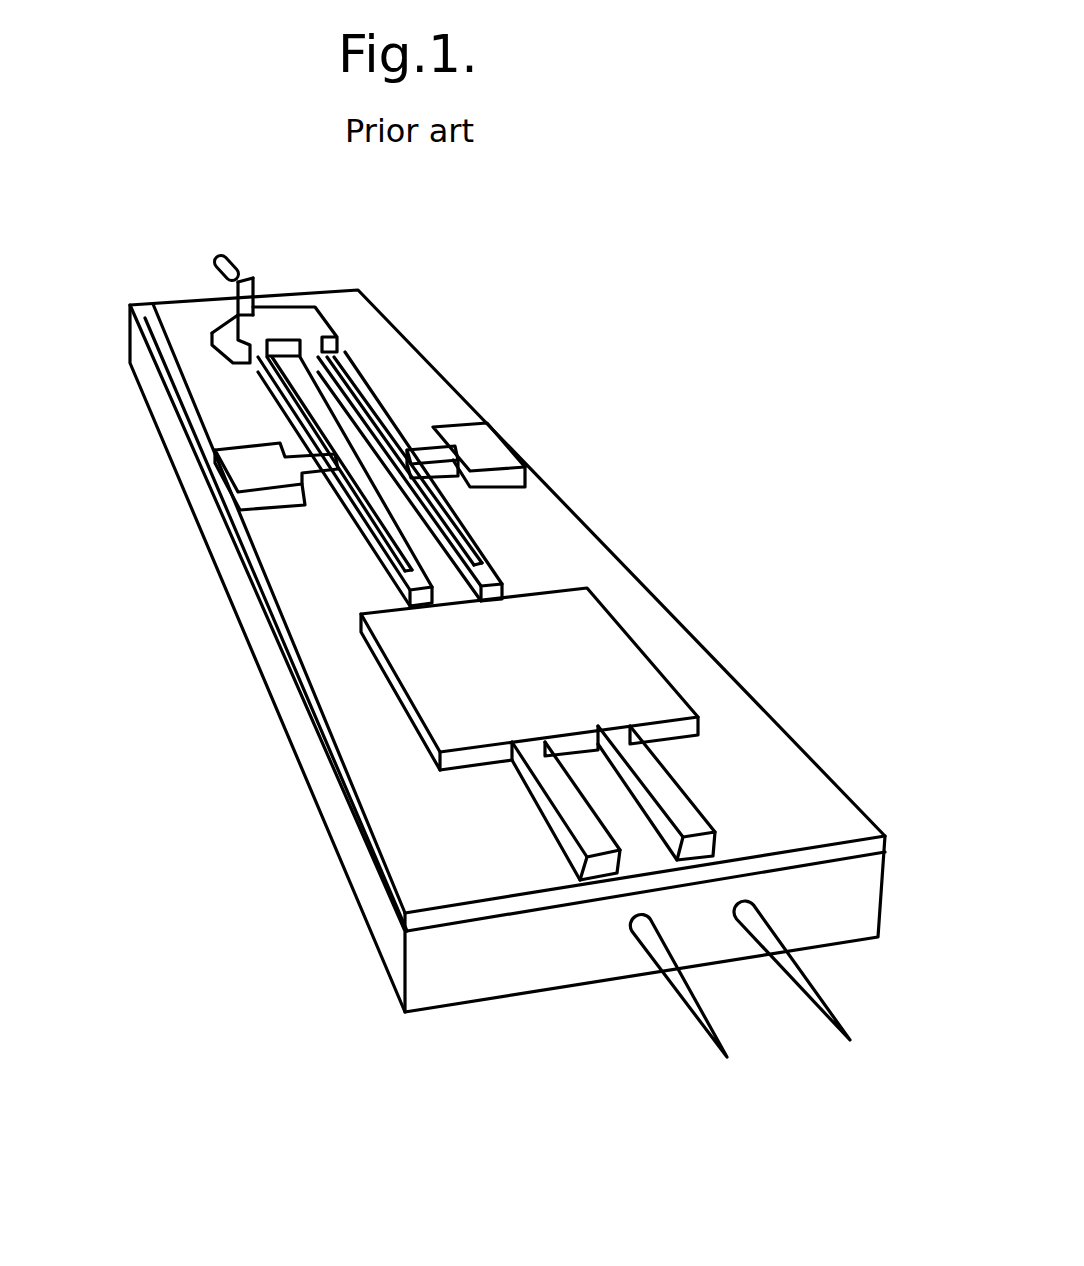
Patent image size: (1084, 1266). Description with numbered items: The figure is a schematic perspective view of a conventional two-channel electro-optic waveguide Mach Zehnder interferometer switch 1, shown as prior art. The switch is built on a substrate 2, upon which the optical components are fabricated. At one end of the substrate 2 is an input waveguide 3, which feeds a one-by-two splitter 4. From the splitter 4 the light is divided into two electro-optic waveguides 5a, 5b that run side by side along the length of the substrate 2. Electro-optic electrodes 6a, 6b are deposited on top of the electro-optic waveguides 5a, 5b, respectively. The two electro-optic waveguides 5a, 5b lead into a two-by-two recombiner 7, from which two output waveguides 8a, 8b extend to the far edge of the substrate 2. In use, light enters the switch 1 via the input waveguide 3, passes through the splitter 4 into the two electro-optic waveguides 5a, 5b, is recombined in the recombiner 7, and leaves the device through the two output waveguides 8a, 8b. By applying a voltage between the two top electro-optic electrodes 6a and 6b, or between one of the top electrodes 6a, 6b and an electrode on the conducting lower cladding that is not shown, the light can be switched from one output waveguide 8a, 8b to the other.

The electro-optic waveguide Mach Zehnder interferometer switch 1 is at (206, 925).
The substrate 2 is at (853, 888).
The input waveguide 3 is at (248, 292).
The 1×2 splitter 4 is at (215, 311).
The electro-optic waveguide 5a is at (403, 585).
The electro-optic waveguide 5b is at (493, 580).
The electro-optic electrode 6a is at (300, 420).
The electro-optic electrode 6b is at (365, 400).
The 2×2 recombiner 7 is at (433, 660).
The output waveguide 8a is at (572, 812).
The output waveguide 8b is at (668, 785).